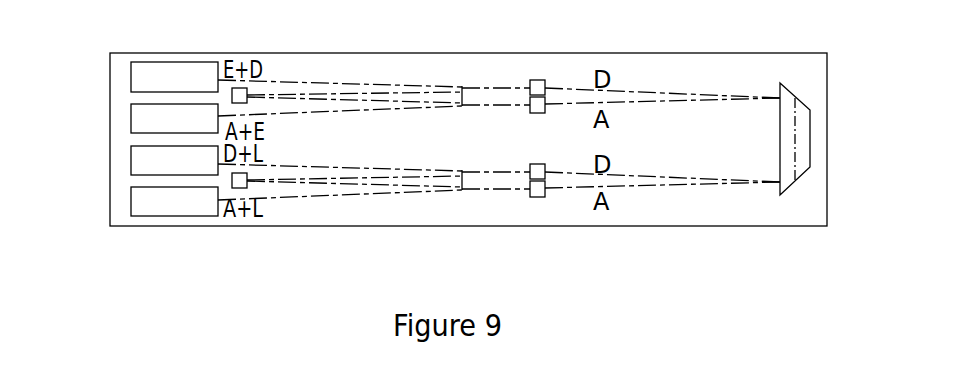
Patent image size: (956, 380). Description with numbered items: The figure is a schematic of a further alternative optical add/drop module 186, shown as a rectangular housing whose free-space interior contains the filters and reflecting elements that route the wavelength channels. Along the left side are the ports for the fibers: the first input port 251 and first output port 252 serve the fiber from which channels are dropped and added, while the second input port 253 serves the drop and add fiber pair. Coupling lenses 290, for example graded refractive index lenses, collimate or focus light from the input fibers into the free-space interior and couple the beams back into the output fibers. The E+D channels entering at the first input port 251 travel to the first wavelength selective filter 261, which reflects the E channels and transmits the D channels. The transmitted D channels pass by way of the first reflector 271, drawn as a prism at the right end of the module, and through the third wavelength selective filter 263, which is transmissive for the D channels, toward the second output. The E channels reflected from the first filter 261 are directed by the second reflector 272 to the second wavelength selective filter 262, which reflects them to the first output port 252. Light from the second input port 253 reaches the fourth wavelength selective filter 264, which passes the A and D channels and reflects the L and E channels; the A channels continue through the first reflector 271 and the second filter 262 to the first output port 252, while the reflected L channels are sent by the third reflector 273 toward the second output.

The optical module 186 is at (683, 53).
The first input port 251 is at (130, 76).
The first output port 252 is at (131, 120).
The second input port 253 is at (131, 162).
The coupling lens 290 is at (174, 77).
The second reflector 272 is at (247, 94).
The third reflector 273 is at (247, 179).
The first wavelength selective filter 261 is at (546, 81).
The second wavelength selective filter 262 is at (546, 110).
The third wavelength selective filter 263 is at (540, 164).
The fourth wavelength selective filter 264 is at (543, 197).
The first reflector 271 is at (807, 172).